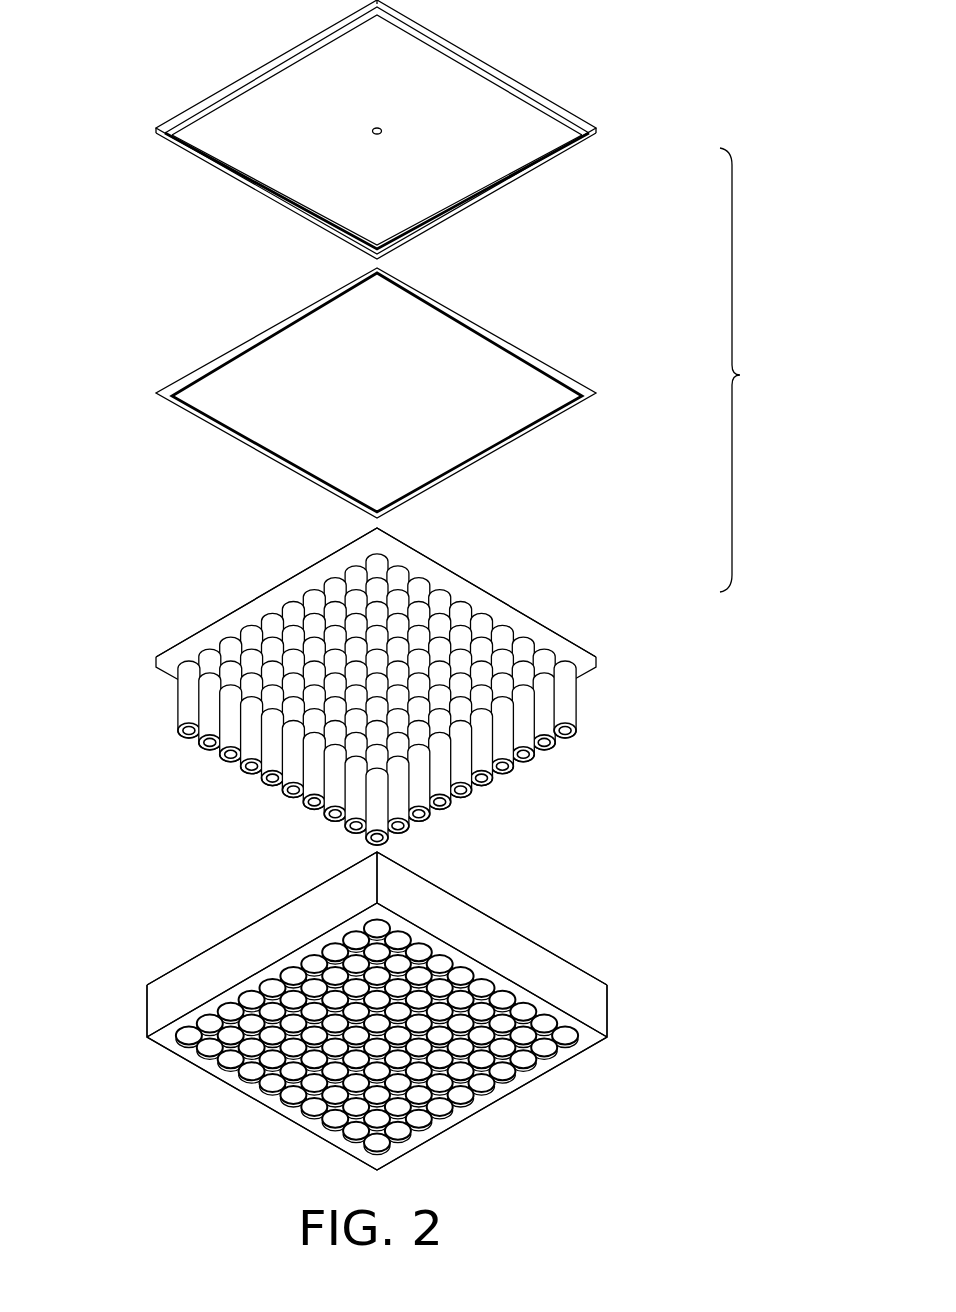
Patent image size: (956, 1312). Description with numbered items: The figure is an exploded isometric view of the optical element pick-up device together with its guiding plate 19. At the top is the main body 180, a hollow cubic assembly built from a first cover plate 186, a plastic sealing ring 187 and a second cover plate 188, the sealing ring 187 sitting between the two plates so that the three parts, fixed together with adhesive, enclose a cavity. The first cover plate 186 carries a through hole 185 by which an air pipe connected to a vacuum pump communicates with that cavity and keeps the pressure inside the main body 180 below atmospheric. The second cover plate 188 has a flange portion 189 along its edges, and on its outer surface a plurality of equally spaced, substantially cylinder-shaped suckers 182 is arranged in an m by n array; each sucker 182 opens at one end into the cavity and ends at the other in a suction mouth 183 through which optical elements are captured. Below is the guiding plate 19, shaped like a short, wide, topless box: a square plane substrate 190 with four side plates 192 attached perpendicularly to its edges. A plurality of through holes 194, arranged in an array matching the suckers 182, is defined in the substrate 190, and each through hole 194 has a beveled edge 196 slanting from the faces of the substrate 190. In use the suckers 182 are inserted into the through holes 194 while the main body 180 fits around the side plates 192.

The guiding plate 19 is at (574, 946).
The main body 180 is at (756, 370).
The suckers 182 is at (567, 692).
The suction mouth 183 is at (565, 738).
The through hole 185 is at (378, 126).
The first cover plate 186 is at (573, 145).
The plastic sealing ring 187 is at (573, 382).
The second cover plate 188 is at (547, 633).
The flange portion 189 is at (190, 633).
The plane substrate 190 is at (167, 1037).
The side plates 192 is at (167, 1000).
The through holes 194 is at (358, 1036).
The beveled edge 196 is at (253, 1075).